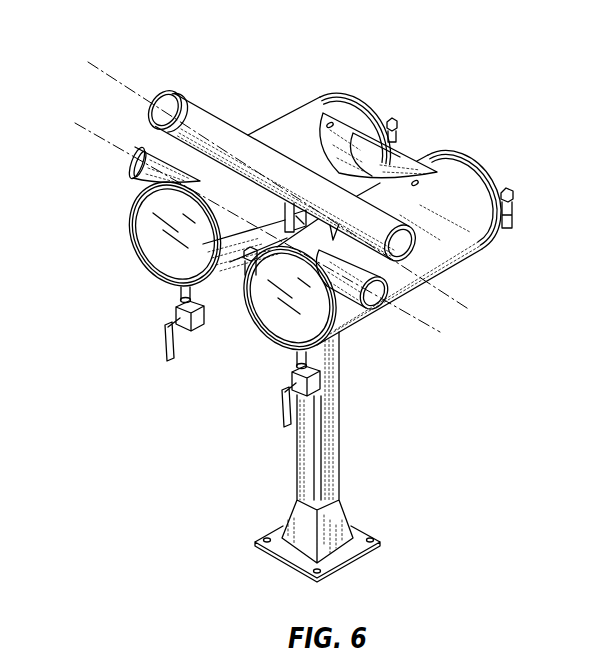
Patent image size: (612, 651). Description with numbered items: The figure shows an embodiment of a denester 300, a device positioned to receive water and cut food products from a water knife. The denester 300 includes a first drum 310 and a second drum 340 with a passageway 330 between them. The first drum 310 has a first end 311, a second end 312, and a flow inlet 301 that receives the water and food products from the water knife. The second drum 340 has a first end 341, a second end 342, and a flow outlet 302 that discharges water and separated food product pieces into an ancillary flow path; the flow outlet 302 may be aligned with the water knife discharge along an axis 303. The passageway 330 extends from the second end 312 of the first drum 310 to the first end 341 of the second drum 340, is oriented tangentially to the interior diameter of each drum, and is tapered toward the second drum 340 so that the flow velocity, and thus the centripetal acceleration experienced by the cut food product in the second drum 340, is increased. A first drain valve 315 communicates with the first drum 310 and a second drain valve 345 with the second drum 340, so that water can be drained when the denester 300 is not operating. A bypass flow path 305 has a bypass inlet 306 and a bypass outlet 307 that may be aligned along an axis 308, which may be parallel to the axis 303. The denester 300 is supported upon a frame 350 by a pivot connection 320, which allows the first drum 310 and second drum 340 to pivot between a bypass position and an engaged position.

The denester 300 is at (478, 57).
The flow inlet 301 is at (130, 170).
The flow outlet 302 is at (382, 310).
The axis 303 is at (88, 133).
The bypass flow path 305 is at (207, 115).
The bypass inlet 306 is at (168, 95).
The bypass outlet 307 is at (401, 250).
The axis 308 is at (123, 82).
The first drum 310 is at (310, 116).
The first end 311 is at (157, 254).
The second end 312 is at (371, 101).
The first drain valve 315 is at (165, 352).
The pivot connection 320 is at (283, 208).
The passageway 330 is at (402, 158).
The second drum 340 is at (459, 185).
The first end 341 is at (500, 198).
The second end 342 is at (277, 324).
The second drain valve 345 is at (282, 420).
The frame 350 is at (331, 448).